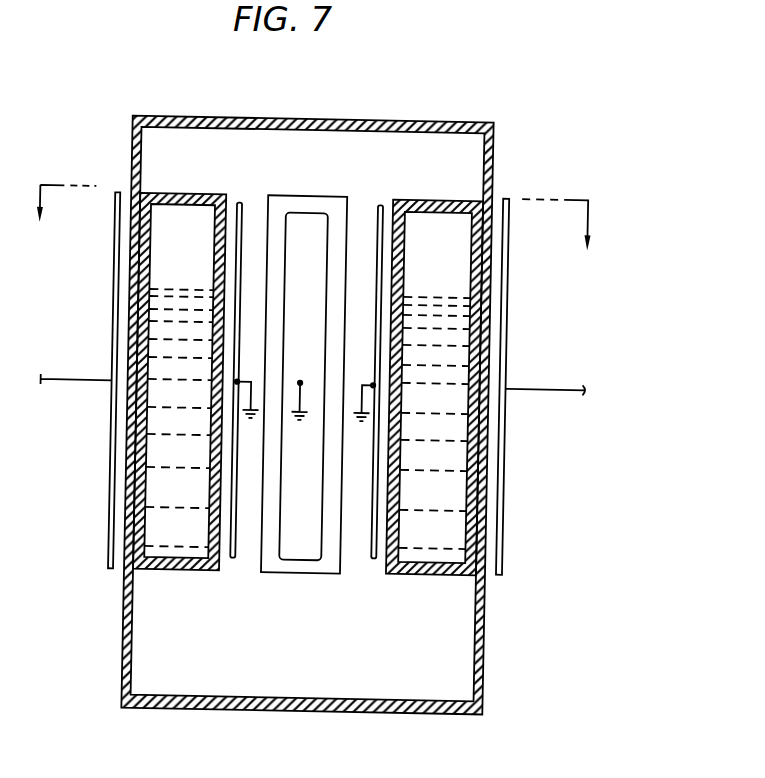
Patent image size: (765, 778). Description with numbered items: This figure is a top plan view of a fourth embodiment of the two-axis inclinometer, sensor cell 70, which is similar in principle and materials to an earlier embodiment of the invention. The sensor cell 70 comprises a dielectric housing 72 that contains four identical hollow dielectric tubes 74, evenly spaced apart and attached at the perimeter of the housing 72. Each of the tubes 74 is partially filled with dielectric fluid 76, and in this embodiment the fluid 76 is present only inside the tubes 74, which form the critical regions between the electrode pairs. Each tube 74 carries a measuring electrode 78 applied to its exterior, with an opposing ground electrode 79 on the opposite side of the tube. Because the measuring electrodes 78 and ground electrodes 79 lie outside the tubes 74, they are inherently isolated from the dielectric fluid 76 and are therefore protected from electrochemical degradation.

The sensor cell 70 is at (617, 95).
The dielectric housing 72 is at (489, 657).
The hollow dielectric tube 74 is at (179, 196).
The dielectric fluid 76 is at (452, 530).
The measuring electrode 78 is at (505, 303).
The ground electrode 79 is at (240, 559).